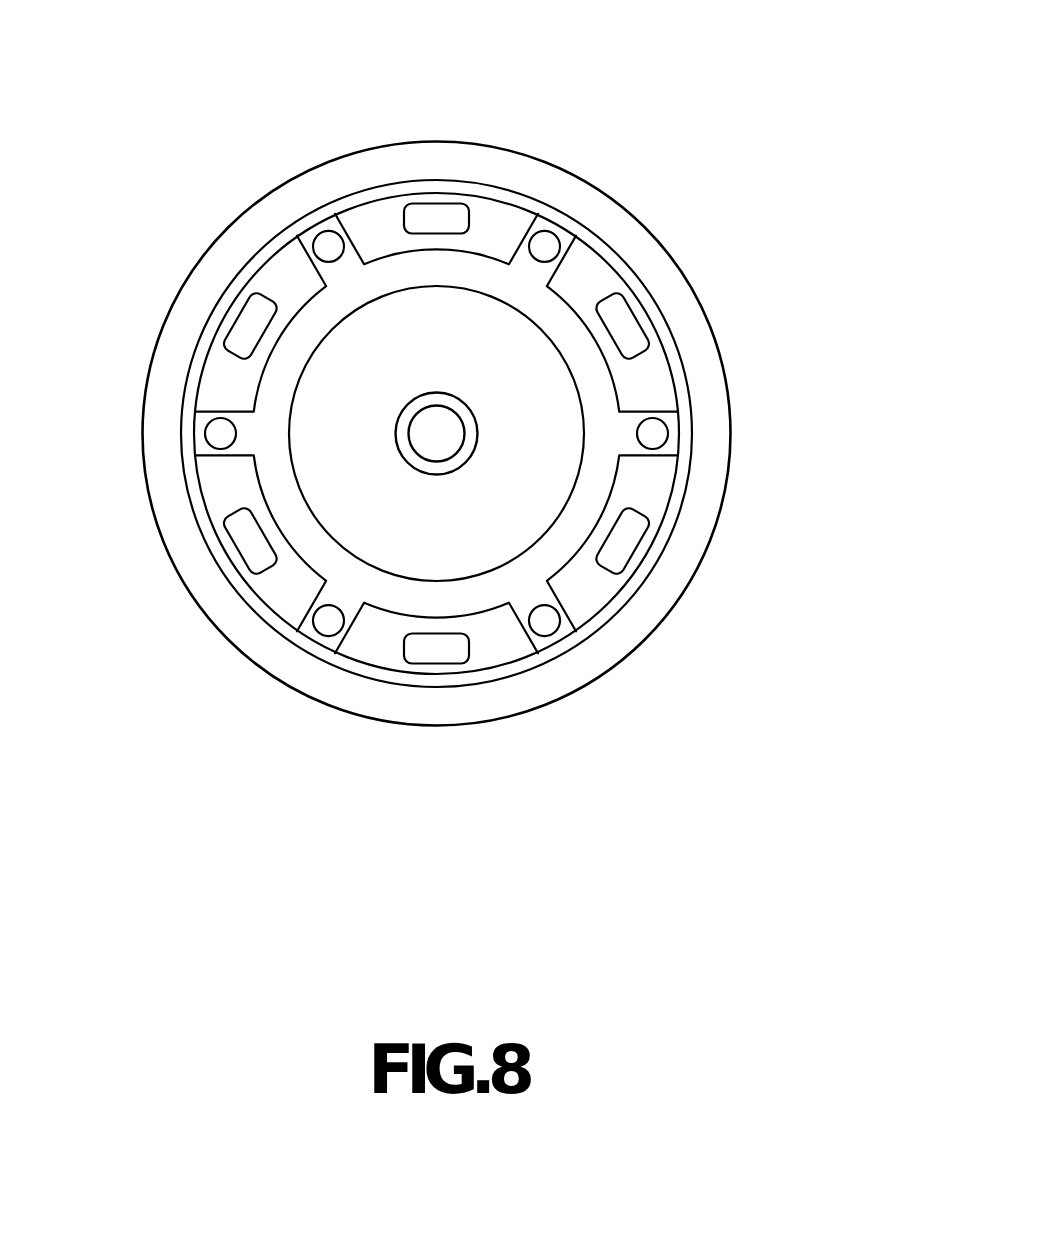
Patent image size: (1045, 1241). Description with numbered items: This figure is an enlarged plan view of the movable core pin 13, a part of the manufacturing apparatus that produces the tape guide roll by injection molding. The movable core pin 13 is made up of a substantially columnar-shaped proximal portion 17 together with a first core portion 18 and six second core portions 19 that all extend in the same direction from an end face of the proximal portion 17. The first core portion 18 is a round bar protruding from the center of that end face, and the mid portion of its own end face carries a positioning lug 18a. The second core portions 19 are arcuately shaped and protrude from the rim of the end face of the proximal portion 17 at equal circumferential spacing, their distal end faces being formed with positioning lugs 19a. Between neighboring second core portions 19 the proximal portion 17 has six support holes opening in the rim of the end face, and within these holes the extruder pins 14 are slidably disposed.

The movable core pin 13 is at (688, 155).
The extruder pins 14 is at (327, 247).
The proximal portion 17 is at (713, 377).
The first core portion 18 is at (478, 545).
The positioning lug 18a is at (435, 427).
The second core portions 19 is at (502, 215).
The positioning lugs 19a is at (437, 214).